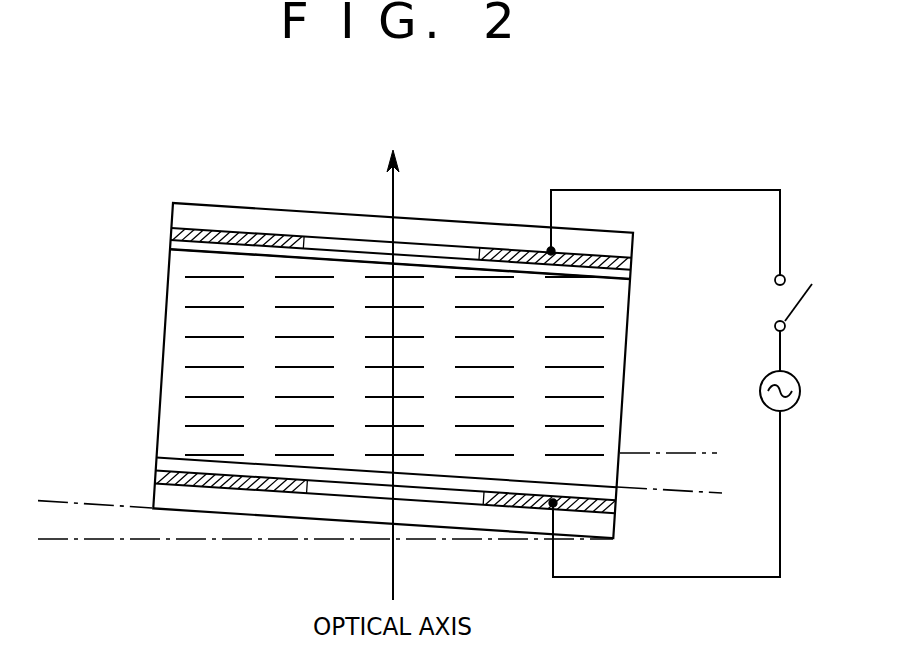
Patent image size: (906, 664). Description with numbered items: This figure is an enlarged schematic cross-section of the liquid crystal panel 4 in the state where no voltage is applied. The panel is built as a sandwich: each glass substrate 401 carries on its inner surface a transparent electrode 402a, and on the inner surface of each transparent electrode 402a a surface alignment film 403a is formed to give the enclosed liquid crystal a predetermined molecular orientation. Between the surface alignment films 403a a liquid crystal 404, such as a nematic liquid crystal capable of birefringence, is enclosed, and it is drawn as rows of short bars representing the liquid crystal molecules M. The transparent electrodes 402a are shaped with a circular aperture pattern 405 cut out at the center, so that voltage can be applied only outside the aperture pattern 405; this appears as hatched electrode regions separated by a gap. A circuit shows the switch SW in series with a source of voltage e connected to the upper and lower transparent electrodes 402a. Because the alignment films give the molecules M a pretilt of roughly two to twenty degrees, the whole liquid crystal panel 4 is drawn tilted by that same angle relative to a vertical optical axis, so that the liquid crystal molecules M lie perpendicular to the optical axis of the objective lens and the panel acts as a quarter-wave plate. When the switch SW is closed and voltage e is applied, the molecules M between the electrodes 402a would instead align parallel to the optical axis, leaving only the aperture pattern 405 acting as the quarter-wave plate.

The liquid crystal panel 4 is at (152, 181).
The glass substrate 401 is at (306, 223).
The transparent electrode 402a is at (198, 231).
The surface alignment film 403a is at (172, 244).
The liquid crystal 404 is at (163, 241).
The circular aperture pattern 405 is at (432, 252).
The liquid crystal molecule M is at (585, 363).
The switch SW is at (805, 302).
The voltage e is at (793, 393).